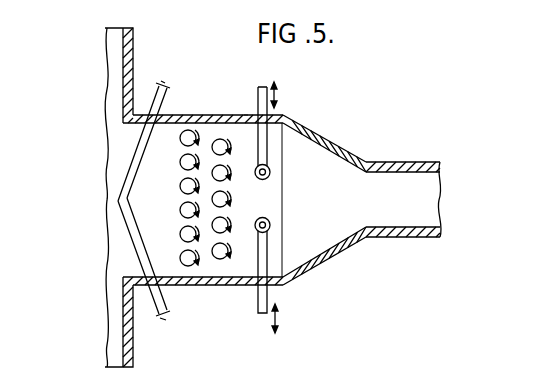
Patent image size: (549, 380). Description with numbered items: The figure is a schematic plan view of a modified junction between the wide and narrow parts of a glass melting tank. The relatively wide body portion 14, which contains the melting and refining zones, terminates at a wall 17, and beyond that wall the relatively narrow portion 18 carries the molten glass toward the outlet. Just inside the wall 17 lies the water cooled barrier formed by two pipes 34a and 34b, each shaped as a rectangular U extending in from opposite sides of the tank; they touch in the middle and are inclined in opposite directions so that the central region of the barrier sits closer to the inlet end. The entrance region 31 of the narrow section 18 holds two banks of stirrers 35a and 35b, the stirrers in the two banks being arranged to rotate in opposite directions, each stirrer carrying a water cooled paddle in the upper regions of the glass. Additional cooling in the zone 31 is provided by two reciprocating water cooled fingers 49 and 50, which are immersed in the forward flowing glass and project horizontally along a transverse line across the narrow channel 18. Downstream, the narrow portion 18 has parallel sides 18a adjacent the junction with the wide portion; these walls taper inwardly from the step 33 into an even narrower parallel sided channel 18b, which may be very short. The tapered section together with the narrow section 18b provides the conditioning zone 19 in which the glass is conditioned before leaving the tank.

The wide body portion 14 is at (117, 361).
The wall 17 is at (134, 64).
The relatively narrow portion 18 is at (350, 151).
The parallel sides 18a is at (182, 116).
The narrower parallel sided channel 18b is at (423, 163).
The conditioning zone 19 is at (430, 205).
The entrance region 31 is at (246, 124).
The step 33 is at (283, 230).
The water cooled pipe 34a is at (135, 229).
The water cooled pipe 34b is at (128, 180).
The bank of stirrers 35a is at (189, 240).
The bank of stirrers 35b is at (221, 232).
The reciprocating water cooled finger 49 is at (283, 120).
The reciprocating water cooled finger 50 is at (268, 297).